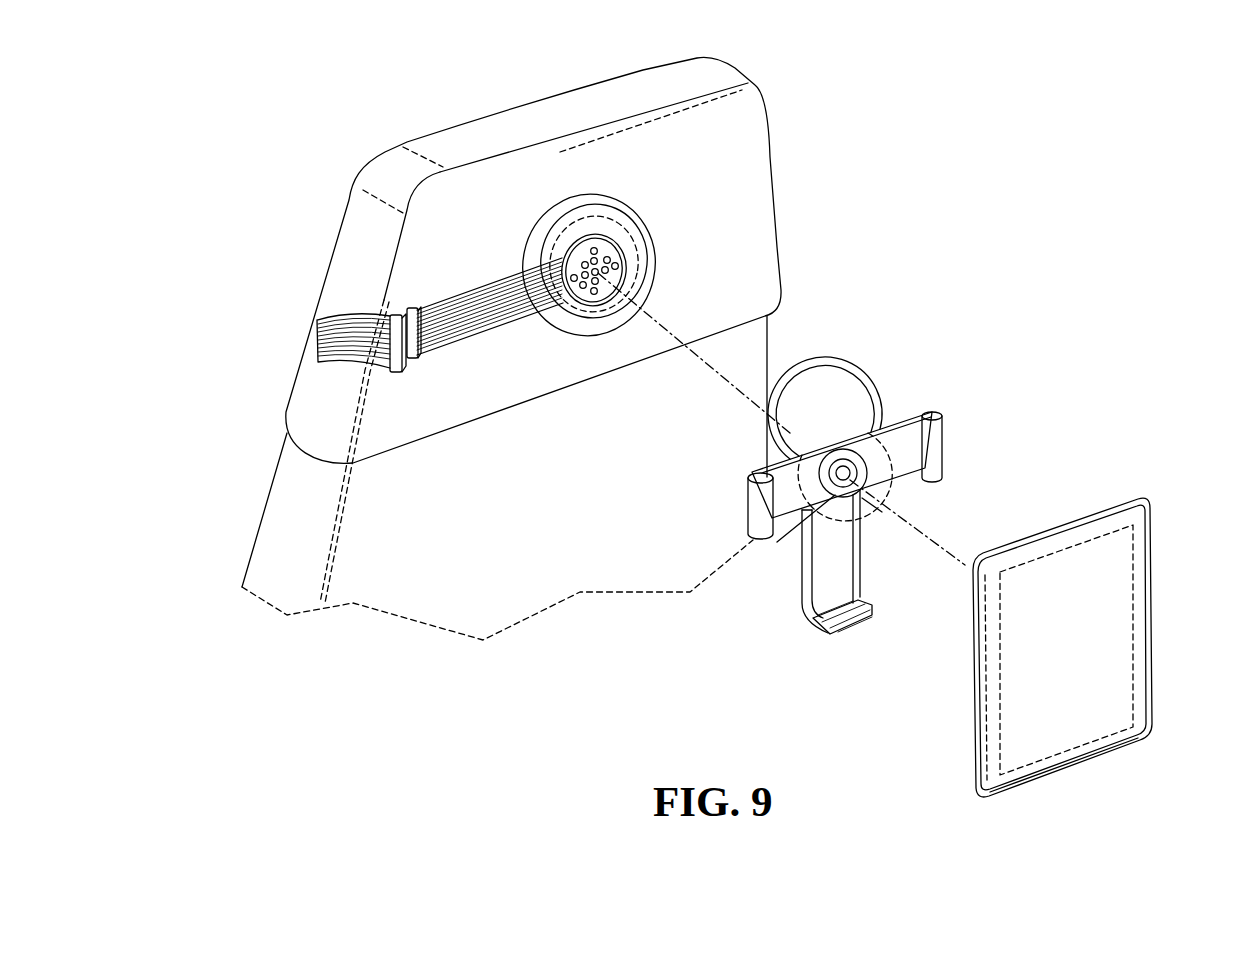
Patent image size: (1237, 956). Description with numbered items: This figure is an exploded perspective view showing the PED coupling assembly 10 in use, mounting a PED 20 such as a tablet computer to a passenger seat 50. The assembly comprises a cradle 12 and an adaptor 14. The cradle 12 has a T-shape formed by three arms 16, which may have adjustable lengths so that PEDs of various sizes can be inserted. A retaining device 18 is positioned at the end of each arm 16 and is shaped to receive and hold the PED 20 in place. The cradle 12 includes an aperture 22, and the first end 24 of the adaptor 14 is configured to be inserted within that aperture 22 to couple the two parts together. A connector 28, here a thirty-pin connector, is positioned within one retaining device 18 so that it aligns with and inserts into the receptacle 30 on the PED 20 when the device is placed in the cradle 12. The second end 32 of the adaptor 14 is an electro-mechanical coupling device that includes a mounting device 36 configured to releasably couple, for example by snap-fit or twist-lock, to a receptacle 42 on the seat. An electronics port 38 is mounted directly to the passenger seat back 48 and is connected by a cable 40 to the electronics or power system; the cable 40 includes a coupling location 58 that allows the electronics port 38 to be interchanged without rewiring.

The PED coupling assembly 10 is at (1090, 445).
The cradle 12 is at (905, 412).
The adaptor 14 is at (848, 393).
The arm 16 is at (852, 529).
The retaining device 18 is at (752, 512).
The PED 20 is at (1143, 606).
The aperture 22 is at (805, 520).
The first end 24 is at (873, 507).
The connector 28 is at (850, 634).
The receptacle 30 is at (1088, 768).
The second end 32 is at (827, 428).
The mounting device 36 is at (862, 417).
The electronics port 38 is at (609, 260).
The cable 40 is at (475, 293).
The receptacle 42 is at (560, 212).
The passenger seat back 48 is at (660, 138).
The passenger seat 50 is at (477, 336).
The coupling location 58 is at (397, 372).